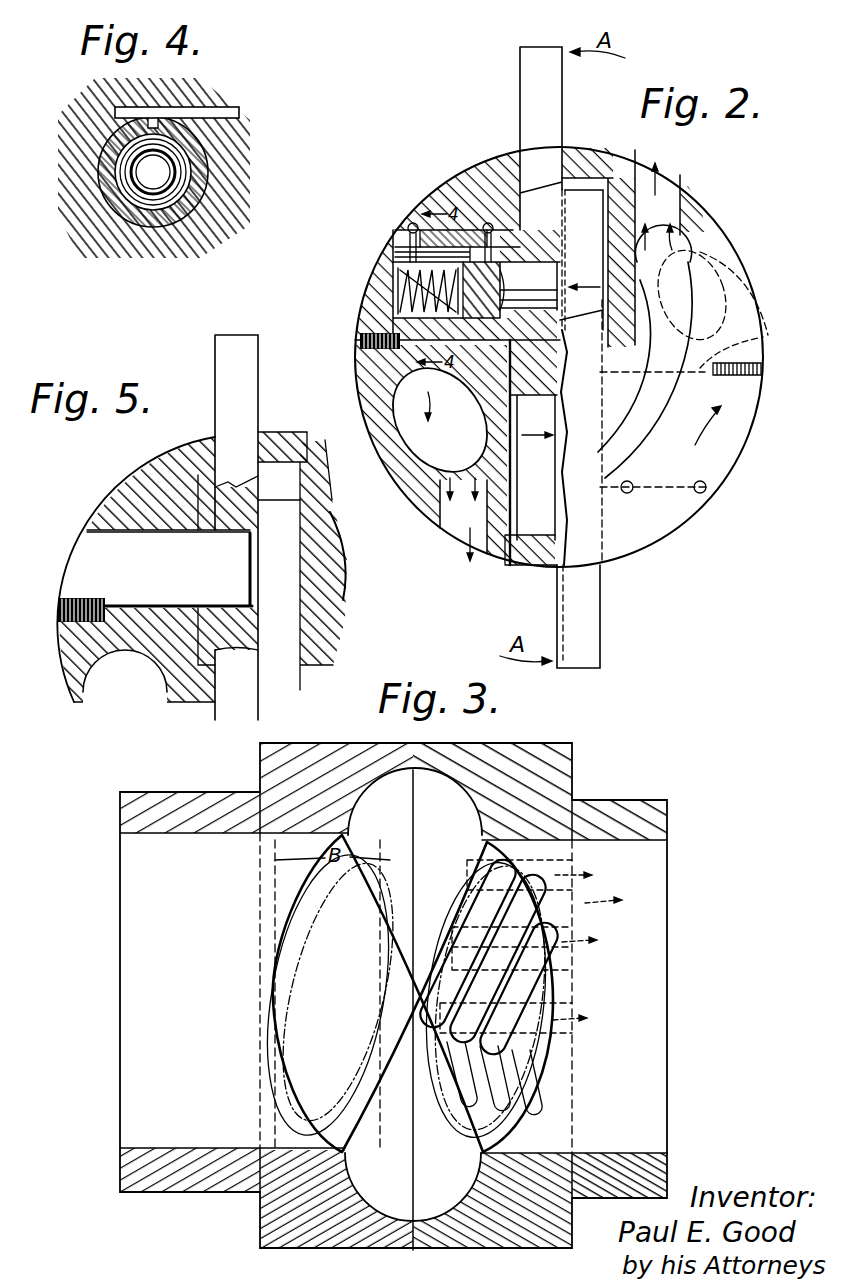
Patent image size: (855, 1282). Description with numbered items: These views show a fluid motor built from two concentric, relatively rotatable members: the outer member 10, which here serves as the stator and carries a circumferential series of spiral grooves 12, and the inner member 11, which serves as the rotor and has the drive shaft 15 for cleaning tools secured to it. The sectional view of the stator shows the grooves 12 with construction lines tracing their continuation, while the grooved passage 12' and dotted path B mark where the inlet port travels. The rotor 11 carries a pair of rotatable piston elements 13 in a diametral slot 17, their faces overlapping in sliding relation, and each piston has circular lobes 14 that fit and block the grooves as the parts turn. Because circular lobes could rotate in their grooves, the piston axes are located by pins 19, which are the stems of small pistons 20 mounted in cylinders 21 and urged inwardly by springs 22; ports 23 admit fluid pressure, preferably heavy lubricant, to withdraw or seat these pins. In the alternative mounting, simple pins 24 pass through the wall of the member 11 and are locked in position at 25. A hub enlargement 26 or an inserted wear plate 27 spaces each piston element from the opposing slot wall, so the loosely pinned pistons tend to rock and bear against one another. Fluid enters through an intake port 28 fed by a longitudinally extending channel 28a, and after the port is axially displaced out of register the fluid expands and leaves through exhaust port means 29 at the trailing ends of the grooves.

In FIG. 3, the outer member 10 is at (560, 782).
In FIG. 2, the inner member 11 is at (737, 426).
In FIG. 4, the inner member 11 is at (100, 115).
In FIG. 5, the inner member 11 is at (140, 470).
In FIG. 3, the spiral grooves 12 is at (413, 994).
In FIG. 3, the plug passage 12' is at (404, 993).
In FIG. 2, the piston elements 13 is at (590, 353).
In FIG. 5, the piston elements 13 is at (268, 516).
In FIG. 2, the lobes 14 is at (520, 70).
In FIG. 5, the lobes 14 is at (250, 369).
In FIG. 2, the drive shaft 15 is at (632, 402).
In FIG. 2, the diametral slot 17 is at (530, 562).
In FIG. 5, the diametral slot 17 is at (282, 446).
In FIG. 2, the pins 19 is at (540, 293).
In FIG. 2, the pistons 20 is at (393, 256).
In FIG. 4, the pistons 20 is at (163, 181).
In FIG. 2, the cylinders 21 is at (396, 235).
In FIG. 4, the cylinders 21 is at (110, 200).
In FIG. 2, the springs 22 is at (396, 281).
In FIG. 4, the springs 22 is at (175, 182).
In FIG. 2, the ports 23 is at (462, 180).
In FIG. 4, the ports 23 is at (240, 113).
In FIG. 5, the pins 24 is at (178, 576).
In FIG. 2, the lock 25 is at (696, 491).
In FIG. 5, the lock 25 is at (57, 612).
In FIG. 2, the hub enlargement 26 is at (537, 424).
In FIG. 5, the wear plate 27 is at (198, 470).
In FIG. 2, the intake port 28 is at (348, 518).
In FIG. 5, the intake port 28 is at (343, 503).
In FIG. 2, the longitudinally-extending channel 28a is at (412, 397).
In FIG. 5, the longitudinally-extending channel 28a is at (352, 575).
In FIG. 3, the exhaust port means 29 is at (545, 975).